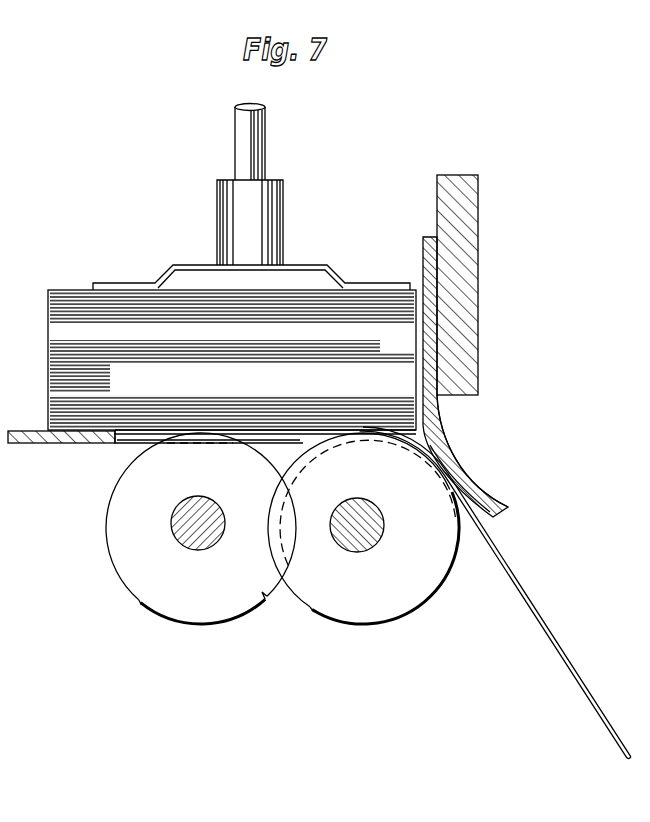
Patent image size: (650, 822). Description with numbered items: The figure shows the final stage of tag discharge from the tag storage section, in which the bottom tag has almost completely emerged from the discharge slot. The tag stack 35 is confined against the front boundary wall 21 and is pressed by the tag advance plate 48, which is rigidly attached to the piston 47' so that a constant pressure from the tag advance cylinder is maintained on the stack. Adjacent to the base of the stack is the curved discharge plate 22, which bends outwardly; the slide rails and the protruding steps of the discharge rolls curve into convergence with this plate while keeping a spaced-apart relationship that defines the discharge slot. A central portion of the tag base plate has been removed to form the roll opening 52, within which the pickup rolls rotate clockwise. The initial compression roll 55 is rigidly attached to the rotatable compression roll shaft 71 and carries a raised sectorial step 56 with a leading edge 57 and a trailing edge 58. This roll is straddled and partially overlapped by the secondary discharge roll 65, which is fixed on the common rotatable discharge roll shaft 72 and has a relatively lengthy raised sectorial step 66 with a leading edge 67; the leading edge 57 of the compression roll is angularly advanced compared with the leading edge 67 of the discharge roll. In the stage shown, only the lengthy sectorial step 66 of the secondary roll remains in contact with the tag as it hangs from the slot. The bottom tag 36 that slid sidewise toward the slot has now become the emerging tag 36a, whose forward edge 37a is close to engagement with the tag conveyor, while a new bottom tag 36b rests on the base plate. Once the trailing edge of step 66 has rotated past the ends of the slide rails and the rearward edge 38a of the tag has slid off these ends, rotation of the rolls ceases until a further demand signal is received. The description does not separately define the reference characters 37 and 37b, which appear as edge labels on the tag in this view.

The front boundary wall 21 is at (463, 200).
The curved discharge plate 22 is at (490, 496).
The tag stack 35 is at (68, 328).
The bottom tag 36 is at (151, 492).
The tag 36a is at (604, 722).
The new bottom tag 36b is at (264, 430).
The sheet rear portion 37 is at (116, 532).
The forward edge 37a is at (632, 762).
The guide surface 37b is at (450, 420).
The rearward edge 38a is at (446, 437).
The piston 47' is at (273, 142).
The tag advance plate 48 is at (312, 265).
The roll opening 52 is at (468, 532).
The initial compression roll 55 is at (201, 542).
The raised sectorial step 56 is at (185, 612).
The leading edge 57 is at (141, 610).
The trailing edge 58 is at (262, 600).
The secondary discharge roll 65 is at (363, 542).
The raised sectorial step 66 is at (355, 620).
The leading edge 67 is at (313, 613).
The compression roll shaft 71 is at (190, 535).
The discharge roll shaft 72 is at (373, 532).